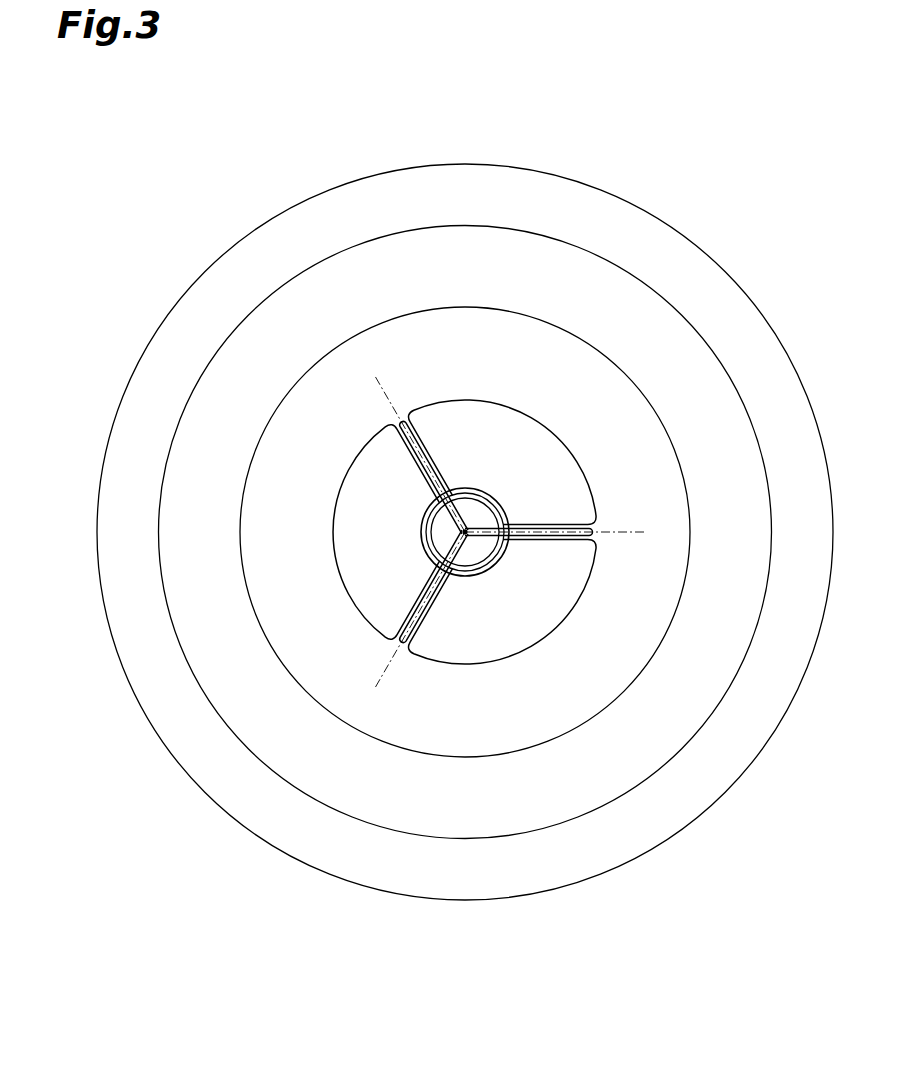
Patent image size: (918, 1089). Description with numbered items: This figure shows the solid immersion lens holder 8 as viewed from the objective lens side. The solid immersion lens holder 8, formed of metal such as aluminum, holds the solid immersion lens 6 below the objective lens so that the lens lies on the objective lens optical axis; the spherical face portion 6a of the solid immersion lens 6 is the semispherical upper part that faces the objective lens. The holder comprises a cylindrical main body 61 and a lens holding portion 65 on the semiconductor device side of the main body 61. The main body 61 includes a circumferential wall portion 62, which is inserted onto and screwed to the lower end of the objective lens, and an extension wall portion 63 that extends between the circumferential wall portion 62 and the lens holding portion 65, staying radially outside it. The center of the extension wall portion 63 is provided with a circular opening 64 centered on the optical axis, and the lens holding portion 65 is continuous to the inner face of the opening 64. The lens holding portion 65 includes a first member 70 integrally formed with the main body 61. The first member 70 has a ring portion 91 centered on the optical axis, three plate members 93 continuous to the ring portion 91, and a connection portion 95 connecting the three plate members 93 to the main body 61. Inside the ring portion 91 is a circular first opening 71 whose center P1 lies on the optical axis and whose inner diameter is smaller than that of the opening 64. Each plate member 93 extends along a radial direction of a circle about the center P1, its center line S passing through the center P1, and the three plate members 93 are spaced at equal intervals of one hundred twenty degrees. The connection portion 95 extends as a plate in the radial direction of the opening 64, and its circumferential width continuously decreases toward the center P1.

The solid immersion lens holder 8 is at (690, 226).
The main body 61 is at (392, 81).
The circumferential wall portion 62 is at (403, 195).
The extension wall portion 63 is at (452, 332).
The opening 64 is at (473, 413).
The lens holding portion 65 is at (400, 616).
The spherical face portion 6a is at (478, 553).
The solid immersion lens 6 is at (515, 562).
The ring portion 91 is at (497, 488).
The plate members 93 is at (453, 516).
The first opening 71 is at (465, 505).
The center P1 is at (462, 532).
The first member 70 is at (540, 520).
The connection portion 95 is at (430, 456).
The center line S is at (388, 413).